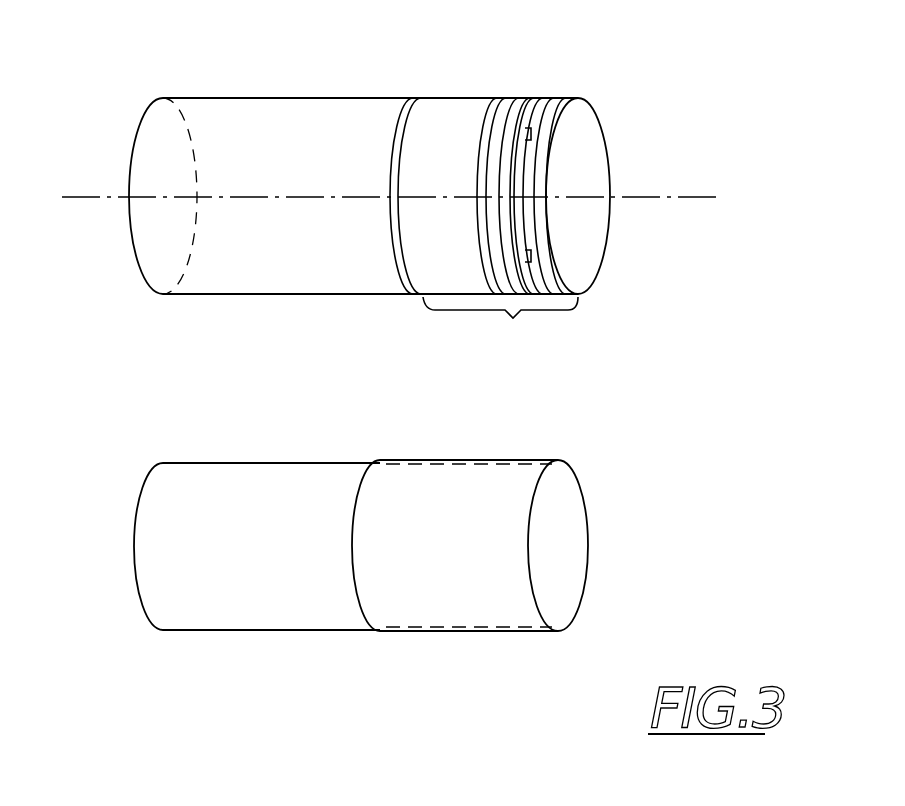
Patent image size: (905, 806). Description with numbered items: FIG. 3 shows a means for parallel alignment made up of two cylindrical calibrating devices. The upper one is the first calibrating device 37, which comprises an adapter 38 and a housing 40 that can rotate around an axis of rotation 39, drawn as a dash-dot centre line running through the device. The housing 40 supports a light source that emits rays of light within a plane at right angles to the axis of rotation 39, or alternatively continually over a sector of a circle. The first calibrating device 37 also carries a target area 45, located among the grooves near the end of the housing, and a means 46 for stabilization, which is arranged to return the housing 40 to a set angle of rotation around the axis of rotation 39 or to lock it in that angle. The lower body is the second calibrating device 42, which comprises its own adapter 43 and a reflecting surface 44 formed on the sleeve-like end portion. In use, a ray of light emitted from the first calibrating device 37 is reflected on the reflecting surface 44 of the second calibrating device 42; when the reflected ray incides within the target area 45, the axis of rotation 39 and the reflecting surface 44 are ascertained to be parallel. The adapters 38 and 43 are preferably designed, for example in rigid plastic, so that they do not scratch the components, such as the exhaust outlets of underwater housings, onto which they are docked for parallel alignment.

The first calibrating device 37 is at (398, 177).
The adapter 38 is at (265, 98).
The axis of rotation 39 is at (690, 197).
The housing 40 is at (526, 341).
The second calibrating device 42 is at (432, 550).
The adapter 43 is at (290, 620).
The reflecting surface 44 is at (440, 634).
The target area 45 is at (540, 118).
The means for stabilization 46 is at (440, 96).